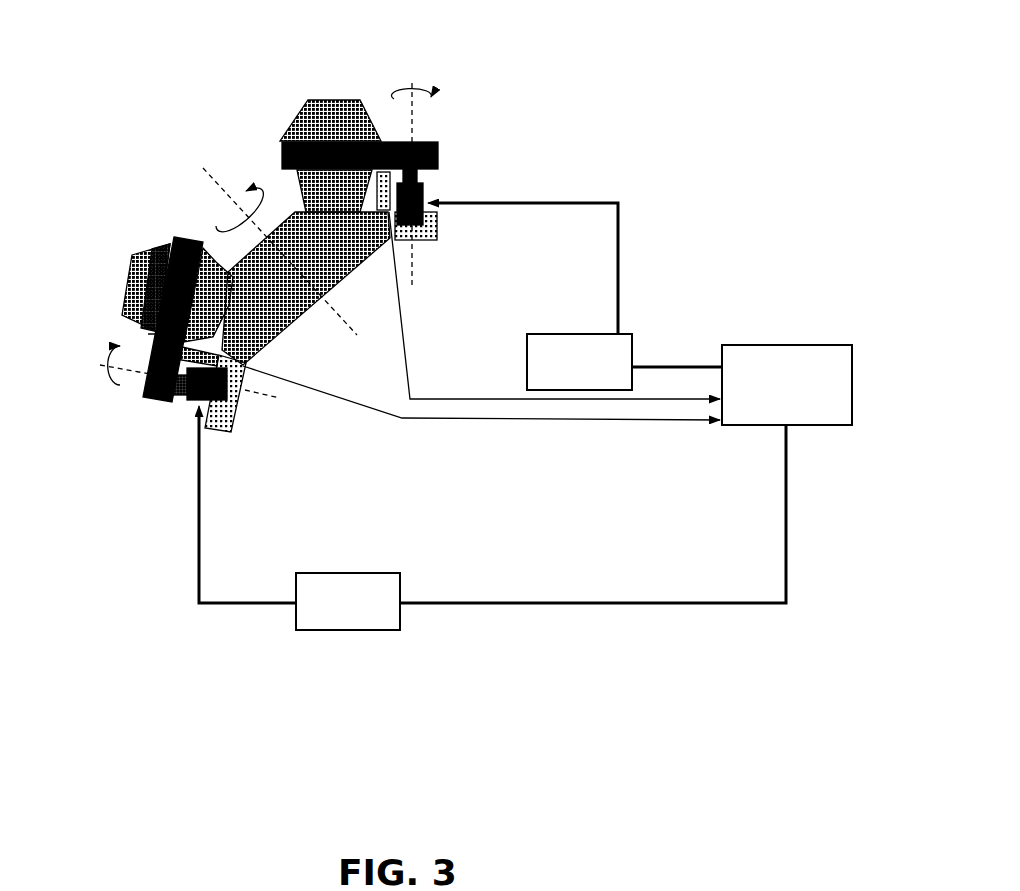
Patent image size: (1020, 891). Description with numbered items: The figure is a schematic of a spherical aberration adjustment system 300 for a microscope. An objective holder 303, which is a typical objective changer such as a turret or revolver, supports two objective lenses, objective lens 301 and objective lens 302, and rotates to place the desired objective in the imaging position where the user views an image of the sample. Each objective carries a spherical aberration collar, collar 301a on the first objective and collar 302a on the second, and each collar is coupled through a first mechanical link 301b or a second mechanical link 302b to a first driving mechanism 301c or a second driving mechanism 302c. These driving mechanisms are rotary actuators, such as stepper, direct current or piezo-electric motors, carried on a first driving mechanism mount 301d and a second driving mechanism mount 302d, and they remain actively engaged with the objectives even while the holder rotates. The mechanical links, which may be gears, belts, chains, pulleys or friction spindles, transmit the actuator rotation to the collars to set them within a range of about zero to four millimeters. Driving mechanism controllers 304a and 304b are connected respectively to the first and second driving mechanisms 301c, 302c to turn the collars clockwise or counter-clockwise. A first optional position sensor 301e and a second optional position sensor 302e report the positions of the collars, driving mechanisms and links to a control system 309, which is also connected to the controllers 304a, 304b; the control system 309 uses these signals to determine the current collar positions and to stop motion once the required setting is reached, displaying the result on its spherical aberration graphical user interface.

The spherical aberration adjustment system 300 is at (698, 33).
The objective lens 301 is at (366, 97).
The spherical aberration collar 301a is at (293, 134).
The first mechanical link 301b is at (379, 140).
The first driving mechanism 301c is at (433, 185).
The first driving mechanism mount 301d is at (440, 228).
The first optional position sensor 301e is at (381, 208).
The objective lens 302 is at (120, 315).
The spherical aberration collar 302a is at (167, 243).
The second mechanical link 302b is at (153, 337).
The second driving mechanism 302c is at (189, 400).
The second driving mechanism mount 302d is at (218, 438).
The second optional position sensor 302e is at (214, 363).
The objective holder 303 is at (298, 309).
The driving mechanism controller 304a is at (530, 296).
The driving mechanism controller 304b is at (492, 518).
The control system 309 is at (547, 318).